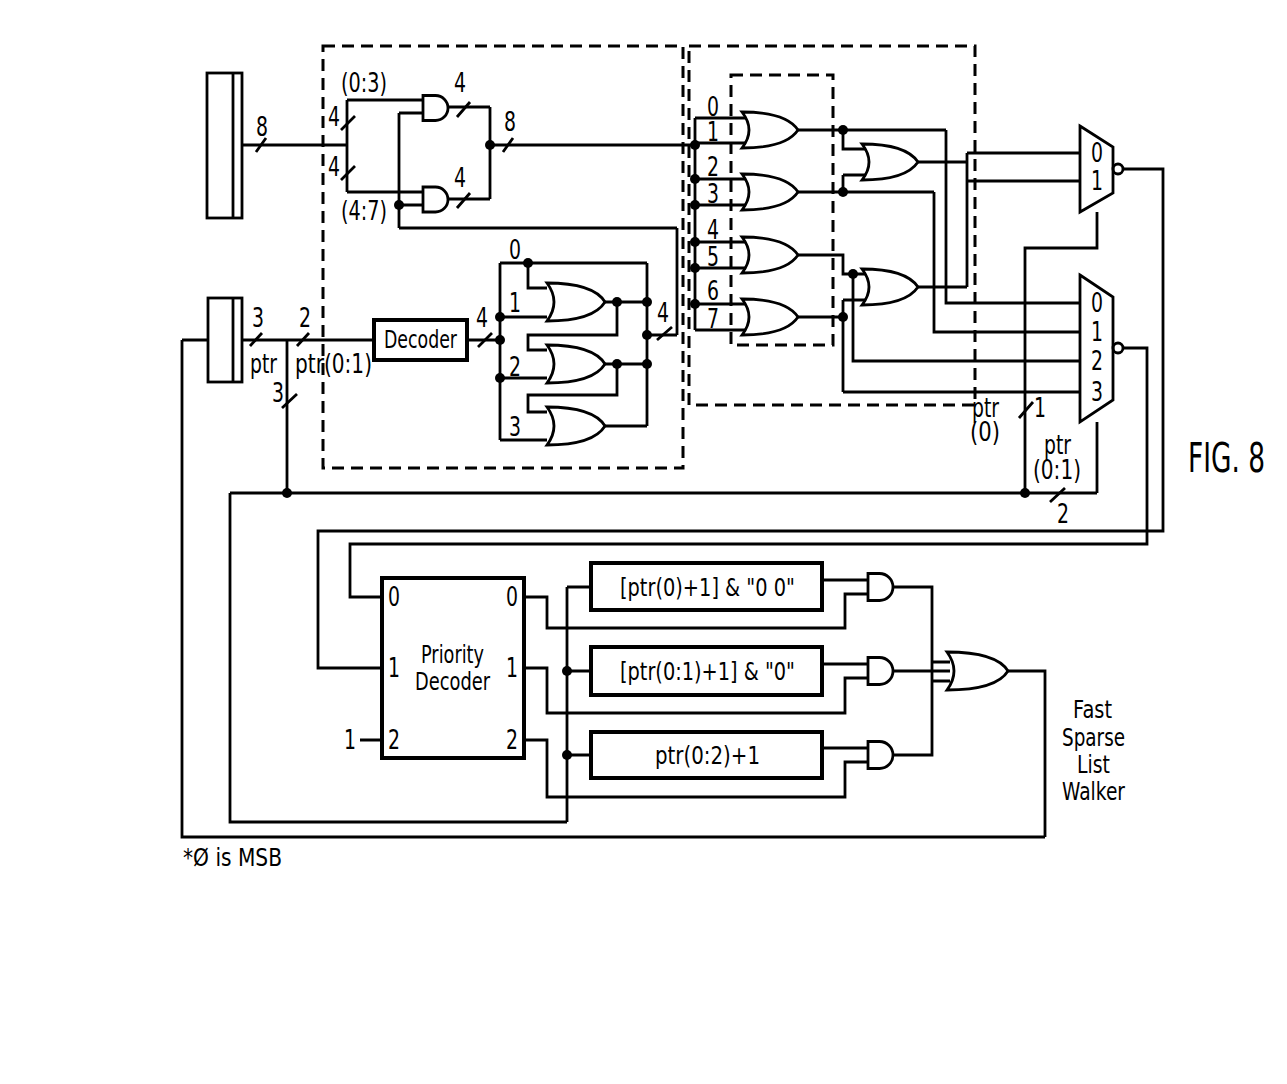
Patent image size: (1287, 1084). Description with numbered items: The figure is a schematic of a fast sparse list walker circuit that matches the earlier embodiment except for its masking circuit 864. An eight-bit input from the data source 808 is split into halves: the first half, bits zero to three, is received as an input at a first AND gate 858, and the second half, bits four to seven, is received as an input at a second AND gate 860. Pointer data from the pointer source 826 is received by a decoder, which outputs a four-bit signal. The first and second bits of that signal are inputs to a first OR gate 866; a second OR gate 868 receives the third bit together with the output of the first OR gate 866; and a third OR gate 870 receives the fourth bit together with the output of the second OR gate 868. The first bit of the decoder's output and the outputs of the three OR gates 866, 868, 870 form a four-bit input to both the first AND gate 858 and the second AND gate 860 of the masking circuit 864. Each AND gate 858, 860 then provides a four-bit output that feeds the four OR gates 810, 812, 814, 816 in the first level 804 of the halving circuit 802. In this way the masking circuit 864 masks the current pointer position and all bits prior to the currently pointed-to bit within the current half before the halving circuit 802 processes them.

The halving circuit 802 is at (765, 407).
The first level 804 is at (780, 348).
The data source 808 is at (243, 207).
The OR gate 810 is at (758, 112).
The OR gate 812 is at (758, 174).
The OR gate 814 is at (758, 237).
The OR gate 816 is at (758, 299).
The pointer source 826 is at (222, 385).
The first AND gate 858 is at (442, 95).
The second AND gate 860 is at (445, 210).
The masking circuit 864 is at (655, 468).
The first OR gate 866 is at (568, 284).
The second OR gate 868 is at (568, 346).
The third OR gate 870 is at (583, 446).